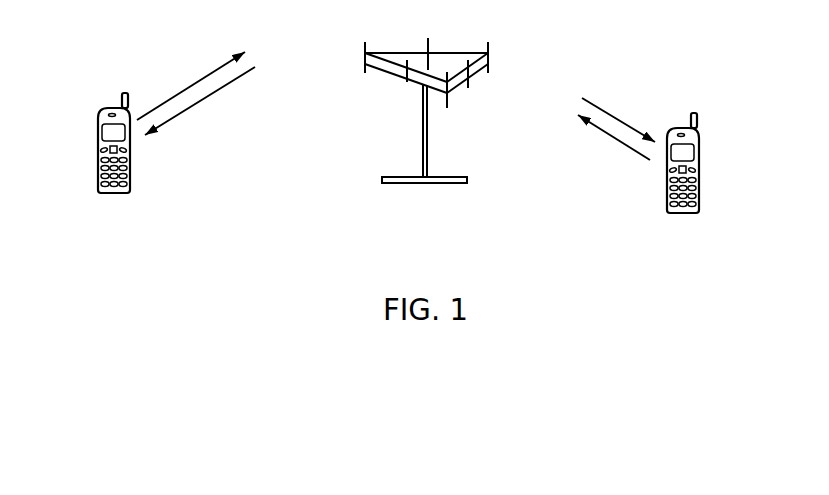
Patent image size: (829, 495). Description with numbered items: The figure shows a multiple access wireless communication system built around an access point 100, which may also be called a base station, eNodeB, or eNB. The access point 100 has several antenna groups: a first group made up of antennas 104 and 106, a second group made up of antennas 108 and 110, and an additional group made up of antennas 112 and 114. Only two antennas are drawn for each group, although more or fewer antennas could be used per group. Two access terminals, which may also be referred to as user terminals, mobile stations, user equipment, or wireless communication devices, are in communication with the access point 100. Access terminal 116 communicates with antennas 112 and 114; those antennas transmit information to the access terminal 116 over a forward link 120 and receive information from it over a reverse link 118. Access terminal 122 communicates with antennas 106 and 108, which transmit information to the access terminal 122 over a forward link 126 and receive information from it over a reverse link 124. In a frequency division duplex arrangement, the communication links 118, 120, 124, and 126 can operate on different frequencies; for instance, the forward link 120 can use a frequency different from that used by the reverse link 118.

The access point 100 is at (428, 116).
The antenna 104 is at (448, 98).
The antenna 106 is at (469, 87).
The antenna 108 is at (490, 67).
The antenna 110 is at (429, 42).
The antenna 112 is at (364, 47).
The antenna 114 is at (406, 88).
The access terminal 116 is at (98, 135).
The reverse link 118 is at (202, 78).
The forward link 120 is at (188, 110).
The access terminal 122 is at (702, 152).
The reverse link 124 is at (620, 145).
The forward link 126 is at (615, 115).